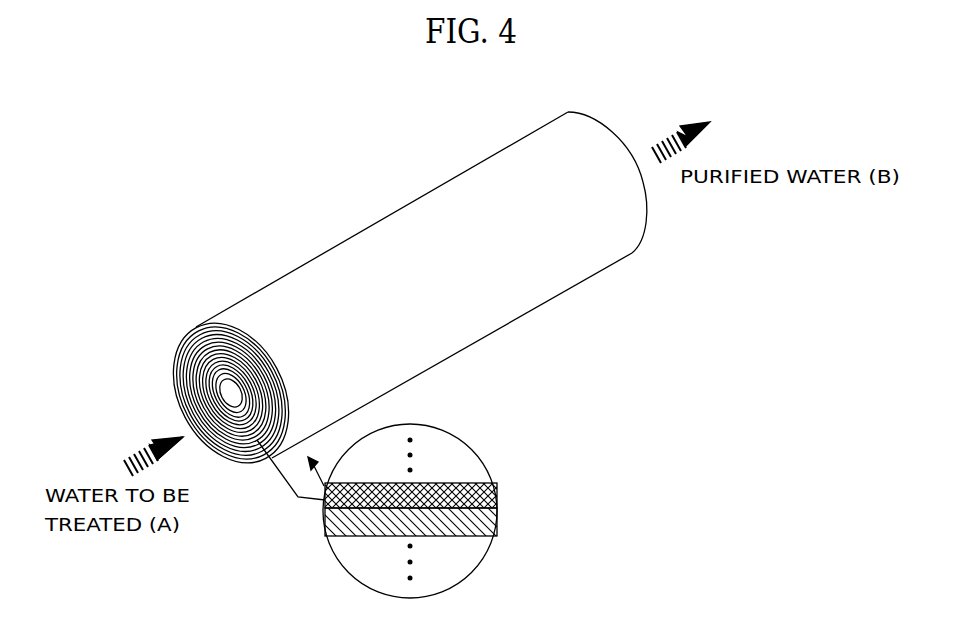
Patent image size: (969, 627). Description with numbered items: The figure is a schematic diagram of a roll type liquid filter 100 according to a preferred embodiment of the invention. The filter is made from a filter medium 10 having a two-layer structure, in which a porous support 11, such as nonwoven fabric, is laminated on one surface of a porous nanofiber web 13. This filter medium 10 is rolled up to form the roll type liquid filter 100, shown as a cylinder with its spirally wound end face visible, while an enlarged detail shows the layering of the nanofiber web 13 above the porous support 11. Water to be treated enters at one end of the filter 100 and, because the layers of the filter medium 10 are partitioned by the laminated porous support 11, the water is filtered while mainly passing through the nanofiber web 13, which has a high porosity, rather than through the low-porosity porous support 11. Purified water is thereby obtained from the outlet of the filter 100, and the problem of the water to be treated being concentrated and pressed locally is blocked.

The roll type liquid filter 100 is at (364, 196).
The filter medium 10 is at (458, 518).
The porous support 11 is at (439, 531).
The porous nanofiber web 13 is at (497, 495).